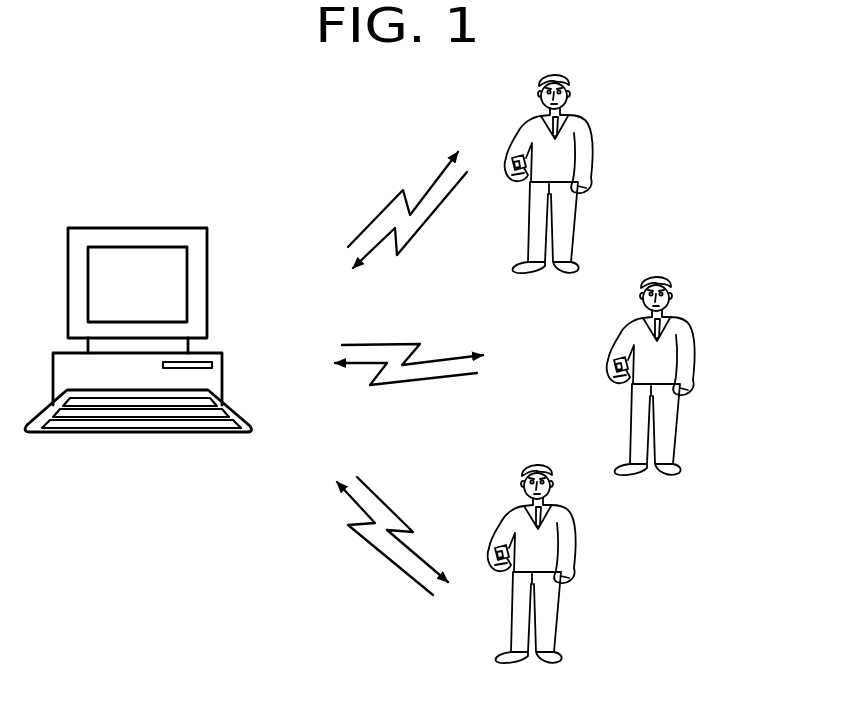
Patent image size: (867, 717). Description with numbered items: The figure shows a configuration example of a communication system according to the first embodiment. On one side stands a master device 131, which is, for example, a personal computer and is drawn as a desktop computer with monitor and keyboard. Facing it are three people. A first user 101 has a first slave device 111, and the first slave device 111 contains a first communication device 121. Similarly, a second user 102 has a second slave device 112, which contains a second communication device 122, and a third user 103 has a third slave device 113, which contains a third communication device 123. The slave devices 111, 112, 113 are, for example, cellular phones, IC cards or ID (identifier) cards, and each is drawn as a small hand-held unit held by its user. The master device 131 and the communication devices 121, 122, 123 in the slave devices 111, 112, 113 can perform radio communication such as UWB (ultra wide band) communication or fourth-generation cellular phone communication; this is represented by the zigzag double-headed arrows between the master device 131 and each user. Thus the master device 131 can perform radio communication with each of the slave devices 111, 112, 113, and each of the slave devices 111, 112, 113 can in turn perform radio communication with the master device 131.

The first user 101 is at (562, 174).
The second user 102 is at (664, 376).
The third user 103 is at (545, 564).
The first slave device 111 is at (508, 155).
The second slave device 112 is at (601, 342).
The third slave device 113 is at (482, 530).
The first communication device 121 is at (503, 162).
The second communication device 122 is at (600, 390).
The third communication device 123 is at (481, 578).
The master device 131 is at (178, 228).